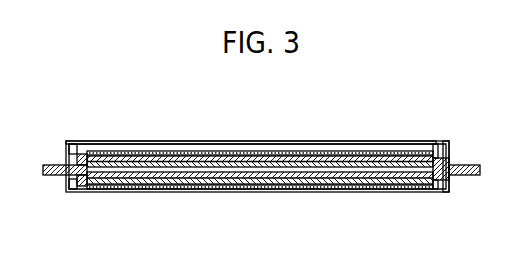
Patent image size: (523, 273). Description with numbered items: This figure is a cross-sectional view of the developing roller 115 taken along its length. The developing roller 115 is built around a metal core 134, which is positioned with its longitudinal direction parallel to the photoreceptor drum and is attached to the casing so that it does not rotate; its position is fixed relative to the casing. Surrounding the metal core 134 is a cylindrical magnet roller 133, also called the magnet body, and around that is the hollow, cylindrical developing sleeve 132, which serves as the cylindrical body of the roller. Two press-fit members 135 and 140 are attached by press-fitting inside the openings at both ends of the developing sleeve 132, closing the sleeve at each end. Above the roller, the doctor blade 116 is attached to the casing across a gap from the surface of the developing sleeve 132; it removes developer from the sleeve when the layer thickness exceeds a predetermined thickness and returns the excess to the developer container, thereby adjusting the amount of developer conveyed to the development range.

The developing roller 115 is at (267, 194).
The doctor blade 116 is at (390, 141).
The developing sleeve 132 is at (225, 189).
The magnet roller 133 is at (183, 183).
The metal core 134 is at (223, 158).
The press-fit member 135 is at (437, 189).
The press-fit member 140 is at (86, 158).